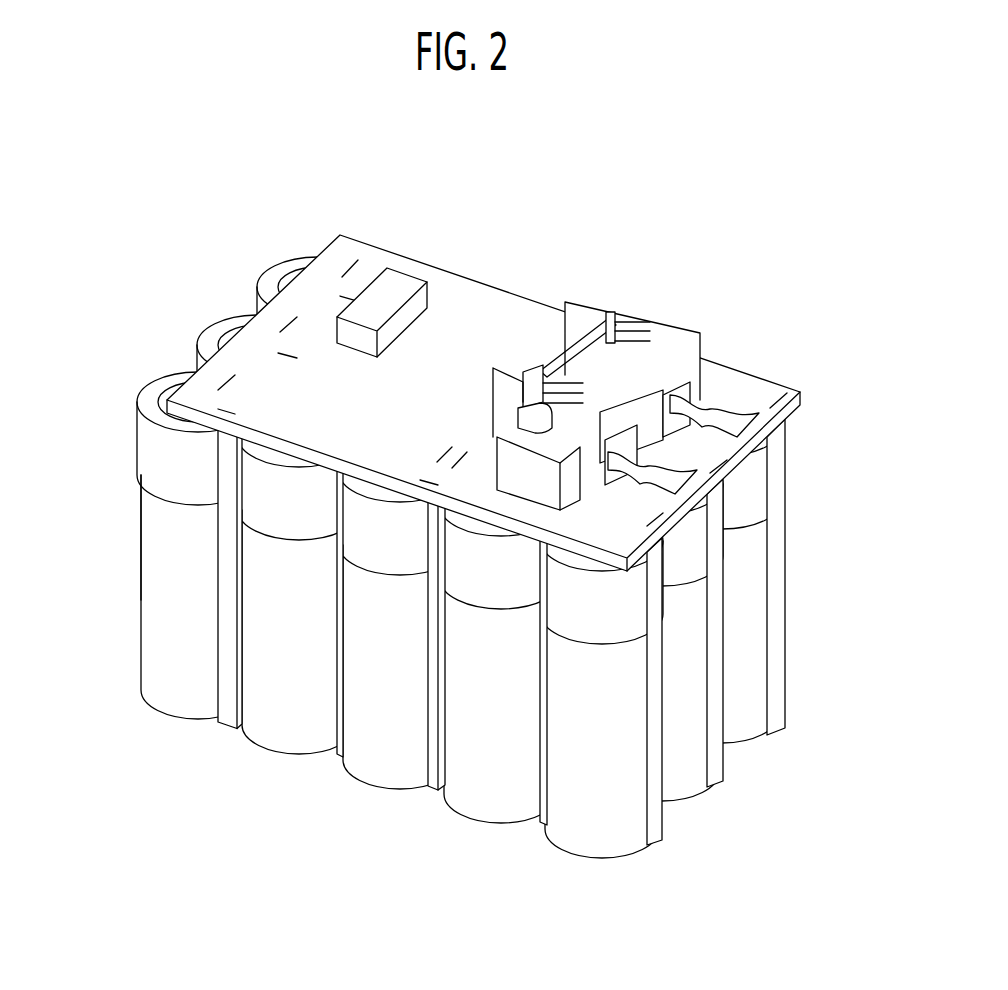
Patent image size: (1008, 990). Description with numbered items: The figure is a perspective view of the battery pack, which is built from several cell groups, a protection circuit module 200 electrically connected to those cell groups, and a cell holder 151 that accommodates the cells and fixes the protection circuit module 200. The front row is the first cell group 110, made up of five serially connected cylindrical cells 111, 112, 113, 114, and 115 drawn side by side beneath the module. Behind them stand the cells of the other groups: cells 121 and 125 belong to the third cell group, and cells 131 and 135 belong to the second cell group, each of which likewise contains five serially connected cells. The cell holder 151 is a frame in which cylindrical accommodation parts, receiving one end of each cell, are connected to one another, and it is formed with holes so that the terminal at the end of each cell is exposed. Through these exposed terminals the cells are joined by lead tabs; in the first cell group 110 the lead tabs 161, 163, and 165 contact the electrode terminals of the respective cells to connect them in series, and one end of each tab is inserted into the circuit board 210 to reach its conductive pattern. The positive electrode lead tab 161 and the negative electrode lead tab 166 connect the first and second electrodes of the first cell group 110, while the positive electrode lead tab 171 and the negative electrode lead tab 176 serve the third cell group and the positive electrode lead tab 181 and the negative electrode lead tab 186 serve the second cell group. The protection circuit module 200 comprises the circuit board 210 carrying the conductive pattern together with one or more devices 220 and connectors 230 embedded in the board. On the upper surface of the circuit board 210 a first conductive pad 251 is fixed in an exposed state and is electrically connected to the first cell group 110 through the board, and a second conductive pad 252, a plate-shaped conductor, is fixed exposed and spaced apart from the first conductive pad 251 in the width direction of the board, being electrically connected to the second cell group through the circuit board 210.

The first cell group 110 is at (462, 580).
The cell 111 is at (585, 845).
The cell 112 is at (487, 813).
The cell 113 is at (382, 777).
The cell 114 is at (297, 747).
The cell 115 is at (162, 572).
The cell 121 is at (682, 782).
The cell 125 is at (223, 458).
The cell 131 is at (742, 724).
The cell 135 is at (286, 398).
The cell holder 151 is at (147, 458).
The positive electrode lead tab 161 is at (660, 827).
The lead tab 163 is at (437, 778).
The lead tab 165 is at (228, 720).
The positive electrode lead tab 171 is at (718, 753).
The positive electrode lead tab 181 is at (775, 625).
The negative electrode lead tab 166 is at (170, 388).
The negative electrode lead tab 176 is at (233, 327).
The negative electrode lead tab 186 is at (297, 266).
The protection circuit module 200 is at (462, 580).
The circuit board 210 is at (470, 296).
The device 220 is at (400, 290).
The connector 230 is at (674, 389).
The first conductive pad 251 is at (653, 478).
The second conductive pad 252 is at (727, 417).